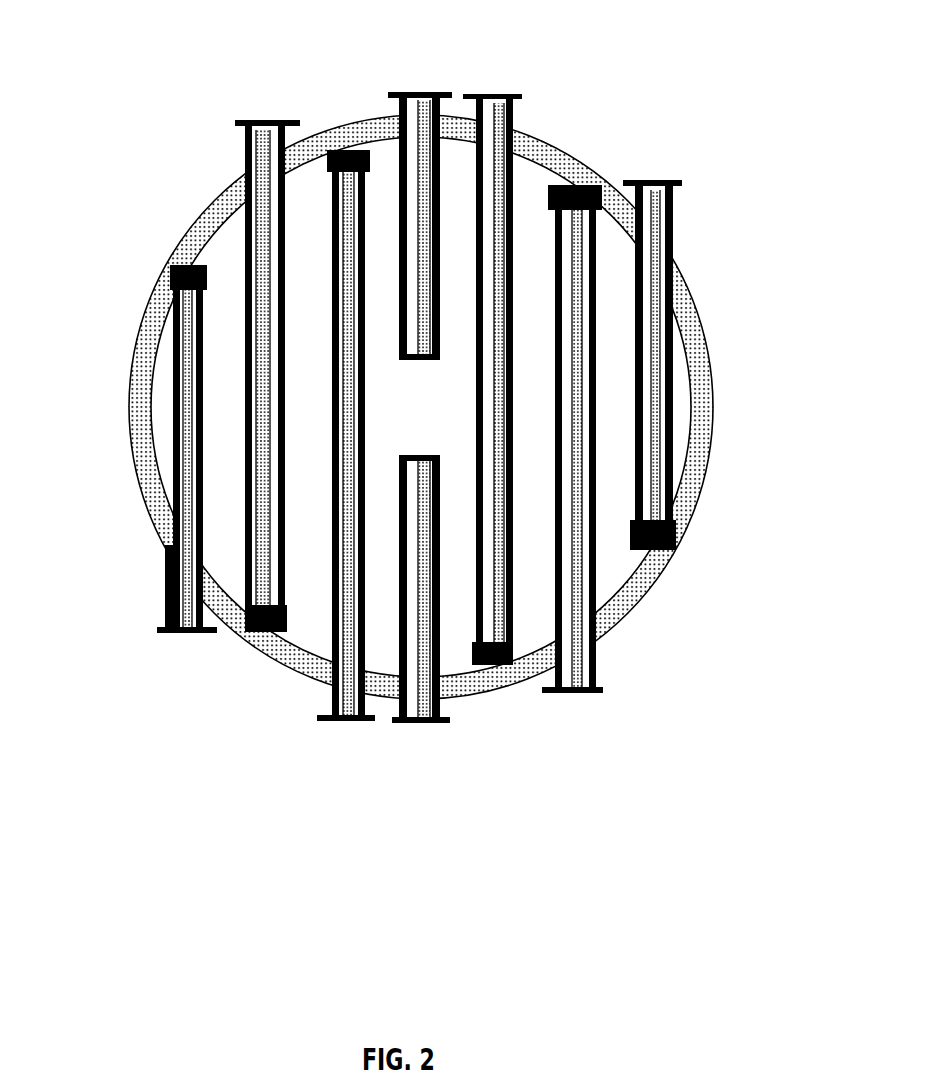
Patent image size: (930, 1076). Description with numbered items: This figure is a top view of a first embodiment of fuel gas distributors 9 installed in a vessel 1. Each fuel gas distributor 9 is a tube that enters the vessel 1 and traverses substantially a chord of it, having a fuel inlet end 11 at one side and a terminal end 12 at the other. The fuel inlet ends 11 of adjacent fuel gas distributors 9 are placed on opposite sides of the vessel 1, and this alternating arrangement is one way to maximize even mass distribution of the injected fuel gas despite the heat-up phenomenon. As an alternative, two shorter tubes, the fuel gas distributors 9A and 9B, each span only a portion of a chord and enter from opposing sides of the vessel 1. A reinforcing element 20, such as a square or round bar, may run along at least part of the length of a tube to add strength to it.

The vessel 1 is at (706, 440).
The fuel gas distributor 9 is at (419, 420).
The fuel gas distributor 9A is at (370, 118).
The fuel gas distributor 9B is at (407, 723).
The fuel inlet end 11 is at (248, 118).
The terminal end 12 is at (655, 575).
The reinforcing element 20 is at (660, 266).